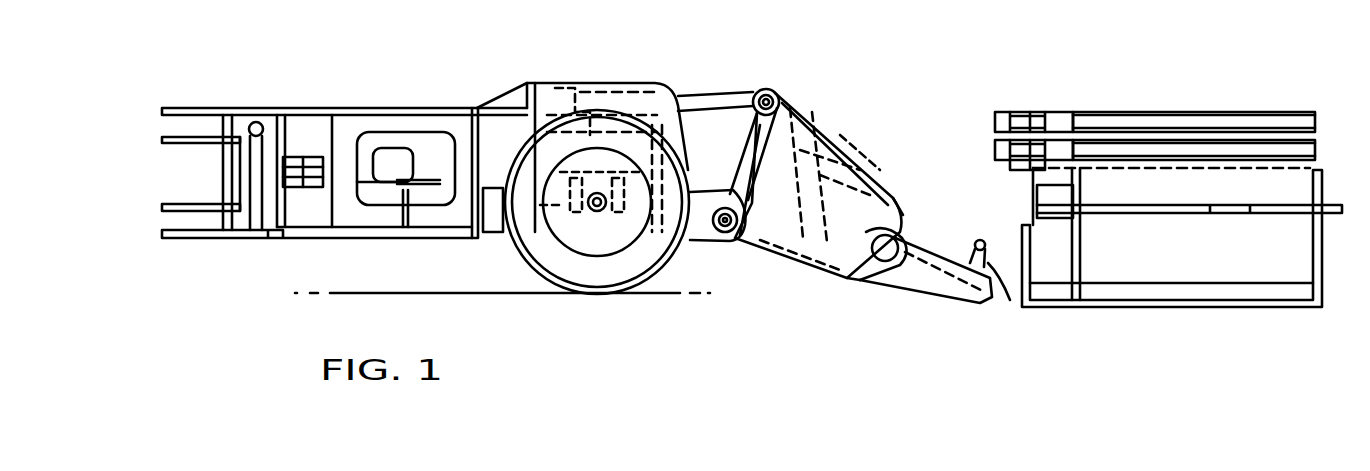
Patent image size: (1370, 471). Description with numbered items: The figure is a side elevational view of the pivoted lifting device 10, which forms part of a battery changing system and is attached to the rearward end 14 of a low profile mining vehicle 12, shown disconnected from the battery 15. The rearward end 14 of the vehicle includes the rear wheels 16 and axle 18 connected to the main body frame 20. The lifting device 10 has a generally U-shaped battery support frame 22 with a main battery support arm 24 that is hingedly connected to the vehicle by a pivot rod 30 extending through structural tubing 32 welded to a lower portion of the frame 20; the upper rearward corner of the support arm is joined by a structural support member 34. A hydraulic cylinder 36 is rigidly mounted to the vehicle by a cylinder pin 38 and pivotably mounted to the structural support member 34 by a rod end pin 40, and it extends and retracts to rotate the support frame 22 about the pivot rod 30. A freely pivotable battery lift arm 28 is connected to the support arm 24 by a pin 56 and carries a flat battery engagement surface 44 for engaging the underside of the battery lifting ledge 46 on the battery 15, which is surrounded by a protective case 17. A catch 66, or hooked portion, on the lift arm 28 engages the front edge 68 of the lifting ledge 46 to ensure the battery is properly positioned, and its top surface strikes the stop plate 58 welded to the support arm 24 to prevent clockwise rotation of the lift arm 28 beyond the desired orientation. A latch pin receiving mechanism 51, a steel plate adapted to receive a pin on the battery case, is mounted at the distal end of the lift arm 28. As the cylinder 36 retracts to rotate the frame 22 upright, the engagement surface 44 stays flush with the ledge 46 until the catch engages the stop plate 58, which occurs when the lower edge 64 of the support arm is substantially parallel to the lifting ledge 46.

The pivoted lifting device 10 is at (865, 95).
The low profile mining vehicle 12 is at (372, 235).
The rearward end 14 is at (704, 257).
The battery 15 is at (1283, 265).
The rear wheels 16 is at (530, 250).
The protective case 17 is at (1268, 267).
The axle 18 is at (597, 212).
The main body frame 20 is at (683, 243).
The battery support frame 22 is at (826, 109).
The main battery support arm 24 is at (837, 277).
The battery lift arm 28 is at (957, 300).
The pivot rod 30 is at (727, 240).
The structural tubing 32 is at (712, 190).
The structural support member 34 is at (780, 95).
The hydraulic cylinder 36 is at (686, 88).
The cylinder pin 38 is at (553, 85).
The rod end pin 40 is at (768, 89).
The battery engagement surface 44 is at (948, 262).
The battery lifting ledge 46 is at (1202, 212).
The latch pin receiving mechanism 51 is at (990, 265).
The pin 56 is at (895, 280).
The stop plate 58 is at (893, 170).
The lower edge 64 is at (803, 262).
The catch 66 is at (898, 211).
The front edge 68 is at (1040, 220).